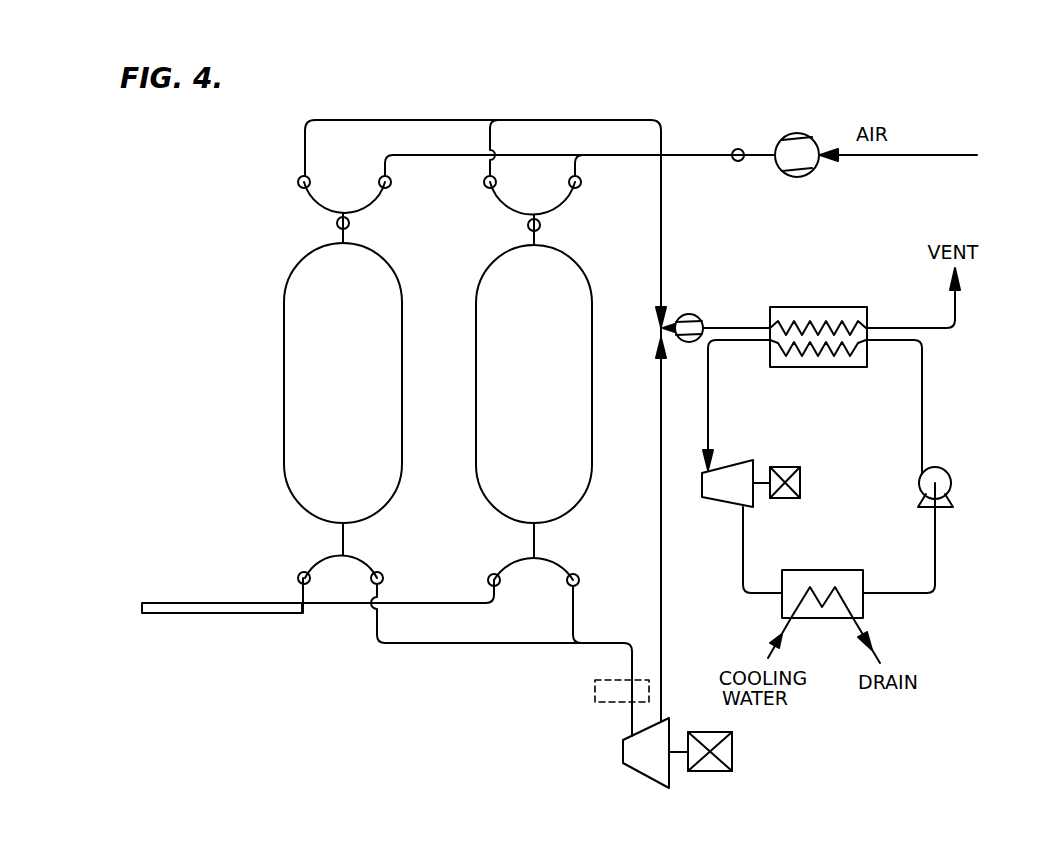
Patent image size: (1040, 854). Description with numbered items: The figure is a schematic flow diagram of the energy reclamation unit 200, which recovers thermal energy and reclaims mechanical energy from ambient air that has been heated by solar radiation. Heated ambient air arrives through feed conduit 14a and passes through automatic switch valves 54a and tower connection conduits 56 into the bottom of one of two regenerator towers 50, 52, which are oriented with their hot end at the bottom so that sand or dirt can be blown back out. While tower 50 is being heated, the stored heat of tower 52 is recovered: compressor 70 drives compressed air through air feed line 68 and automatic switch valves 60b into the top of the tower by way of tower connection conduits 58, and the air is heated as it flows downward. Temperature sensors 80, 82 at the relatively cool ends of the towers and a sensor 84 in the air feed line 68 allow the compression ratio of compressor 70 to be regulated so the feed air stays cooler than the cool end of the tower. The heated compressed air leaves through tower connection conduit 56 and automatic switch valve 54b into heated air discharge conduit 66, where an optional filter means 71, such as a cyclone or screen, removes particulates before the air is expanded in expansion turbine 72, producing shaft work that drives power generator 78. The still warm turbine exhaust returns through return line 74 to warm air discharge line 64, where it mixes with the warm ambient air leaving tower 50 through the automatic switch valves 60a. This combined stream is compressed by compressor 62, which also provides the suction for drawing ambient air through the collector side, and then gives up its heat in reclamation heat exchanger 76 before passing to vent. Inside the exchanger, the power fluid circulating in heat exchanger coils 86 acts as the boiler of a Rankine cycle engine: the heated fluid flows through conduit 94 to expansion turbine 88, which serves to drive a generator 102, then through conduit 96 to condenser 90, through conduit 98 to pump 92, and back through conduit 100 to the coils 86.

The feed conduit 14a is at (260, 605).
The tower 50 is at (331, 459).
The tower 52 is at (523, 459).
The automatic switch valve 54a is at (298, 577).
The automatic switch valve 54b is at (379, 573).
The tower connection conduit 56 is at (340, 530).
The tower connection conduit 58 is at (338, 240).
The automatic switch valve 60a is at (298, 186).
The automatic switch valve 60b is at (389, 188).
The compressor 62 is at (689, 314).
The warm air discharge line 64 is at (545, 120).
The heated air discharge conduit 66 is at (465, 648).
The air feed line 68 is at (675, 154).
The compressor 70 is at (790, 134).
The filter means 71 is at (598, 700).
The expansion turbine 72 is at (623, 762).
The return line 74 is at (661, 436).
The reclamation heat exchanger 76 is at (818, 307).
The power generator 78 is at (707, 771).
The temperature sensor 80 is at (350, 226).
The temperature sensor 82 is at (541, 222).
The sensor 84 is at (740, 161).
The heat exchanger coils 86 is at (820, 356).
The expansion turbine 88 is at (730, 507).
The condenser 90 is at (818, 570).
The pump 92 is at (942, 468).
The conduit 94 is at (710, 394).
The conduit 96 is at (745, 553).
The conduit 98 is at (938, 540).
The conduit 100 is at (923, 380).
The generator 102 is at (790, 467).
The energy reclamation unit 200 is at (303, 648).